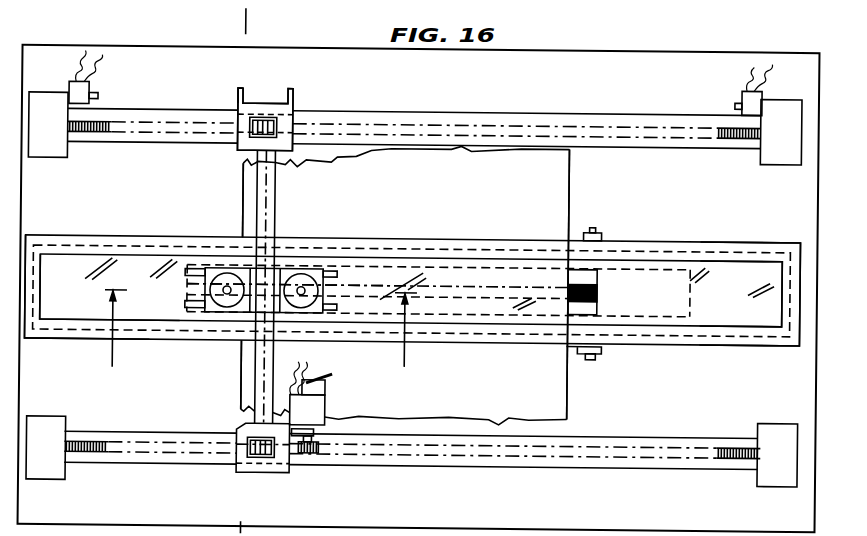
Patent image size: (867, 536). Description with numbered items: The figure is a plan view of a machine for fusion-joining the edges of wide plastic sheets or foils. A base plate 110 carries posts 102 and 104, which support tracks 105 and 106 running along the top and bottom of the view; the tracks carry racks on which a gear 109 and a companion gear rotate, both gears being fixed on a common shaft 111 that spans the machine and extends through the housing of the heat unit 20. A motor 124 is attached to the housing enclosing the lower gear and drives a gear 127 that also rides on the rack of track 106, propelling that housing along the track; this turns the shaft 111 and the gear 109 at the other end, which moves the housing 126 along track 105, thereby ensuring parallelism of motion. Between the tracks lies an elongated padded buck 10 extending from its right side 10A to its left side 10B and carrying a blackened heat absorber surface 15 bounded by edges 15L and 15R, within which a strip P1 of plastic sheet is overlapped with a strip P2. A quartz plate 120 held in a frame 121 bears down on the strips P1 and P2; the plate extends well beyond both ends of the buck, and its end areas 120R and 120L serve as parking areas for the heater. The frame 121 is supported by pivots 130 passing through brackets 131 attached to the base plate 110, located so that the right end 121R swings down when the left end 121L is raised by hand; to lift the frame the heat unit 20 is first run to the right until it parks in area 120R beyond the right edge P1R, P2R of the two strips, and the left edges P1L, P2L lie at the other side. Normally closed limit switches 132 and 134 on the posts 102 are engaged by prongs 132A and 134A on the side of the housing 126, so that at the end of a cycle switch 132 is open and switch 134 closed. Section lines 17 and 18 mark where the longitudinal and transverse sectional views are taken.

The padded buck 10 is at (410, 268).
The right side of buck 10A is at (601, 303).
The left side of buck 10B is at (187, 287).
The blackened heat absorber surface 15 is at (466, 287).
The left edge of heat absorber strip 15L is at (553, 283).
The right edge of heat absorber strip 15R is at (558, 298).
The section line 17- 17 is at (239, 20).
The section line 18- 18 is at (259, 346).
The heat unit 20 is at (286, 270).
The posts 102 is at (38, 106).
The posts 104 is at (44, 475).
The track 105 is at (369, 115).
The track 106 is at (373, 470).
The gear 109 is at (256, 128).
The base plate 110 is at (563, 58).
The common shaft 111 is at (264, 218).
The quartz plate 120 is at (714, 300).
The left end area of quartz plate 120L is at (110, 287).
The right end area of quartz plate 120R is at (741, 294).
The frame 121 is at (690, 240).
The left end of frame 121L is at (90, 244).
The right end of frame 121R is at (763, 245).
The motor 124 is at (328, 404).
The housing 126 is at (296, 128).
The gear 127 is at (313, 456).
The pivots 130 is at (594, 230).
The brackets 131 is at (601, 231).
The limit switch 132 is at (740, 94).
The prong 132A is at (294, 93).
The limit switch 134 is at (82, 96).
The prong 134A is at (240, 92).
The plastic sheet strip P1 is at (571, 391).
The left edge of strip P1 P1L is at (243, 380).
The right edge of strip P1 P1R is at (571, 410).
The plastic sheet strip P2 is at (560, 206).
The left edge of strip P2 P2L is at (211, 200).
The right edge of strip P2 P2R is at (571, 182).